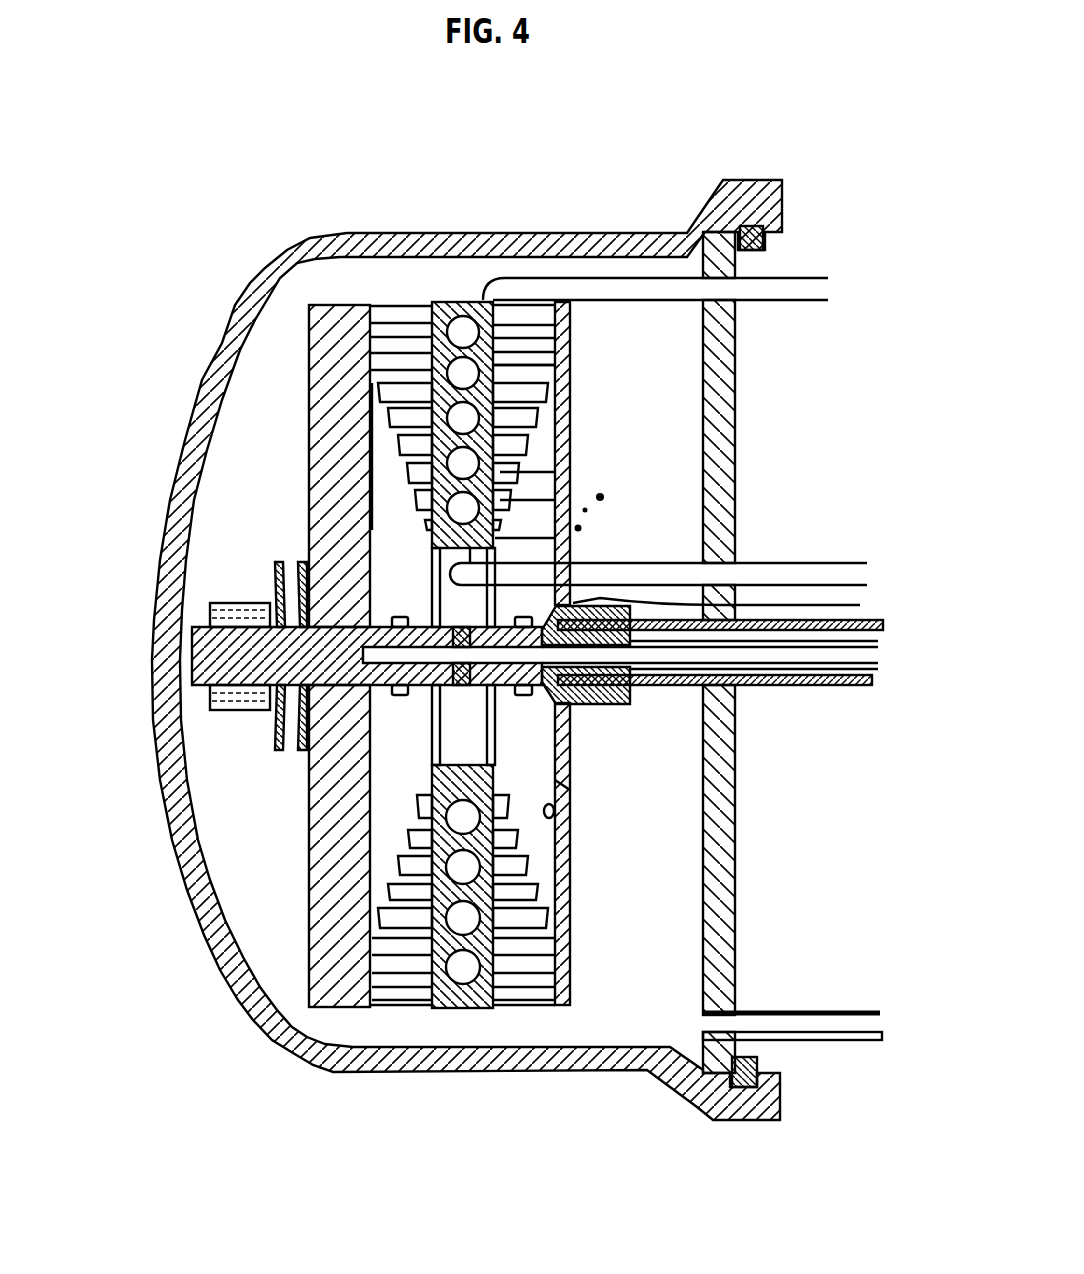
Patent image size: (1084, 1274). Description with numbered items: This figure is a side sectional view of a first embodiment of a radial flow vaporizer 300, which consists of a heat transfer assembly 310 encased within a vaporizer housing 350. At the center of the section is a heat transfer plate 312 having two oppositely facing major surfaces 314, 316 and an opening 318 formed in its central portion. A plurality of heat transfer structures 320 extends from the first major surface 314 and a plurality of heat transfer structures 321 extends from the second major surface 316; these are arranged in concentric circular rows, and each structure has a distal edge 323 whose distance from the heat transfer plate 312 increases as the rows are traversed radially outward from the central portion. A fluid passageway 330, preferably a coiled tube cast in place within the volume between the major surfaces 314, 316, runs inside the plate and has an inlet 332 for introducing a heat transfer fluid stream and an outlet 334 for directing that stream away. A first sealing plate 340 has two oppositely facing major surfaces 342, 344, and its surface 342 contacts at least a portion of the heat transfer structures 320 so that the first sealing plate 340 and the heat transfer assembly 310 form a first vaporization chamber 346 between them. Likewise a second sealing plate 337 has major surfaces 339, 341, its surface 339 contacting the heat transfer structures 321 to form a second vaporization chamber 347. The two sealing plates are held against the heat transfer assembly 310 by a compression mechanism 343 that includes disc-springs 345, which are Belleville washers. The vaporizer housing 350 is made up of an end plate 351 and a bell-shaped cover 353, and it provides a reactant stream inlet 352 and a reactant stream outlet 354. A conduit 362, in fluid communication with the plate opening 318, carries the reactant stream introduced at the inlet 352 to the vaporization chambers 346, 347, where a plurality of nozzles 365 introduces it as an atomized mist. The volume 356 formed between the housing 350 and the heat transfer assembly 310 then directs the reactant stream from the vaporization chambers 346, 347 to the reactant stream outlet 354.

The radial flow vaporizer 300 is at (254, 261).
The heat transfer assembly 310 is at (449, 294).
The heat transfer plate 312 is at (543, 392).
The first heat transfer plate major surface 314 is at (368, 432).
The second heat transfer plate major surface 316 is at (493, 365).
The opening 318 is at (860, 605).
The heat transfer structures 320 is at (400, 478).
The heat transfer structures 321 is at (500, 500).
The distal edge 323 is at (570, 405).
The fluid passageway 330 is at (568, 336).
The inlet 332 is at (858, 572).
The outlet 334 is at (822, 288).
The second sealing plate 337 is at (560, 786).
The second sealing plate major surface 339 is at (551, 816).
The first sealing plate 340 is at (322, 350).
The second sealing plate major surface 341 is at (570, 857).
The first sealing plate major surface 342 is at (495, 538).
The compression mechanism 343 is at (236, 717).
The first sealing plate major surface 344 is at (317, 527).
The disc-springs 345 is at (277, 568).
The first vaporization chamber 346 is at (400, 782).
The second vaporization chamber 347 is at (523, 748).
The vaporizer housing 350 is at (630, 1076).
The end plate 351 is at (727, 329).
The reactant stream inlet 352 is at (888, 675).
The bell-shaped cover 353 is at (215, 962).
The reactant stream outlet 354 is at (870, 1020).
The volume 356 is at (392, 290).
The conduit 362 is at (836, 684).
The nozzles 365 is at (394, 697).